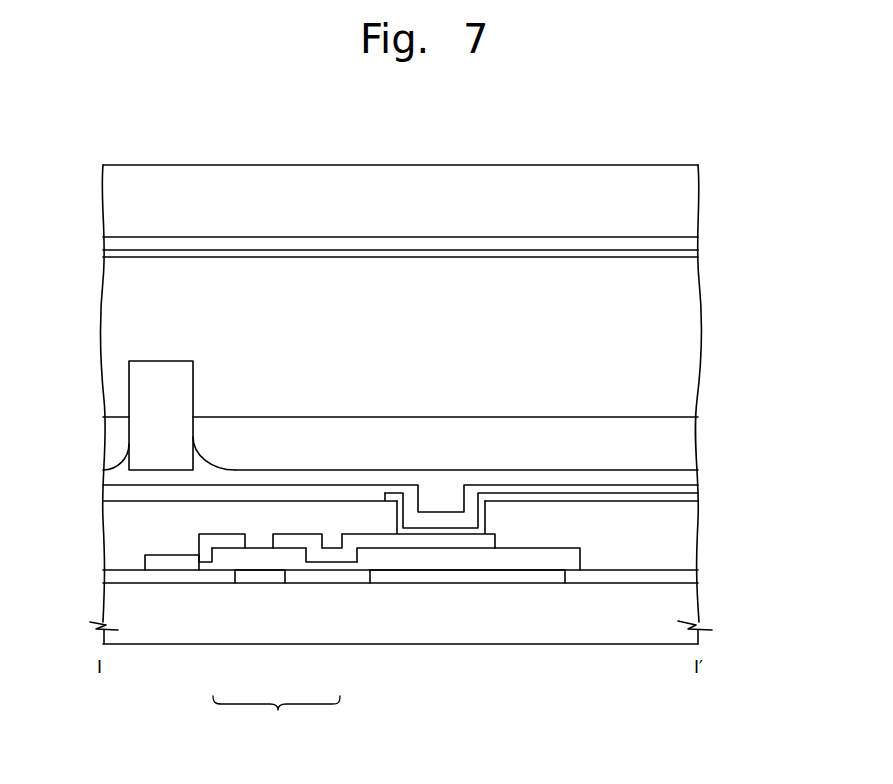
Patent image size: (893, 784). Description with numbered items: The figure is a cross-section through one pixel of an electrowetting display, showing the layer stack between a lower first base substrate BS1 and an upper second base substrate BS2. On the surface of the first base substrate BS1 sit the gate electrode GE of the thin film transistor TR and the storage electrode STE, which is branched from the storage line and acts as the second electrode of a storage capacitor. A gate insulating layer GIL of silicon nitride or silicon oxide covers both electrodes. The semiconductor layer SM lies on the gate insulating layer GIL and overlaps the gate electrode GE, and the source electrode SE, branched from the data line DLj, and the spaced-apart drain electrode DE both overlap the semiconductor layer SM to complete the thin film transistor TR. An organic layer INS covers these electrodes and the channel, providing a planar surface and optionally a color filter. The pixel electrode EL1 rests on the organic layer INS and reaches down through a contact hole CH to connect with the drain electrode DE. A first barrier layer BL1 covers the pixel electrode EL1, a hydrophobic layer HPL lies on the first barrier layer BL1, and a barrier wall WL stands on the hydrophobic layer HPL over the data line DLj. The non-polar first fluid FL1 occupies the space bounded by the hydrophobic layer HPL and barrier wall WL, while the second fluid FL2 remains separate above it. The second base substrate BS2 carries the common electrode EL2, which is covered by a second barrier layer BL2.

The second base substrate BS2 is at (688, 204).
The common electrode EL2 is at (688, 247).
The second barrier layer BL2 is at (688, 256).
The second fluid FL2 is at (688, 336).
The barrier wall WL is at (140, 388).
The first fluid FL1 is at (688, 441).
The hydrophobic layer HPL is at (690, 480).
The first barrier layer BL1 is at (690, 488).
The pixel electrode EL1 is at (692, 499).
The organic layer INS is at (690, 546).
The gate insulating layer GIL is at (690, 575).
The first base substrate BS1 is at (690, 606).
The data line DLj is at (168, 562).
The source electrode SE is at (223, 541).
The gate electrode GE is at (258, 577).
The semiconductor layer SM is at (297, 553).
The drain electrode DE is at (328, 557).
The thin film transistor TR is at (276, 714).
The storage electrode STE is at (454, 577).
The contact hole CH is at (485, 520).